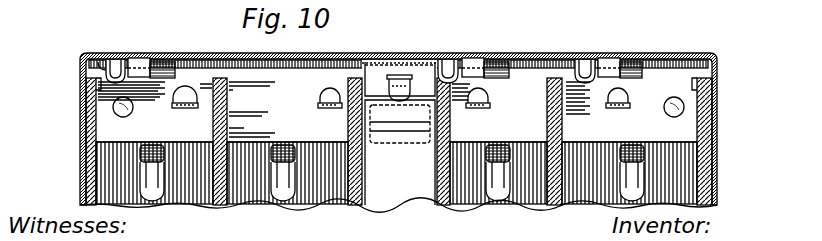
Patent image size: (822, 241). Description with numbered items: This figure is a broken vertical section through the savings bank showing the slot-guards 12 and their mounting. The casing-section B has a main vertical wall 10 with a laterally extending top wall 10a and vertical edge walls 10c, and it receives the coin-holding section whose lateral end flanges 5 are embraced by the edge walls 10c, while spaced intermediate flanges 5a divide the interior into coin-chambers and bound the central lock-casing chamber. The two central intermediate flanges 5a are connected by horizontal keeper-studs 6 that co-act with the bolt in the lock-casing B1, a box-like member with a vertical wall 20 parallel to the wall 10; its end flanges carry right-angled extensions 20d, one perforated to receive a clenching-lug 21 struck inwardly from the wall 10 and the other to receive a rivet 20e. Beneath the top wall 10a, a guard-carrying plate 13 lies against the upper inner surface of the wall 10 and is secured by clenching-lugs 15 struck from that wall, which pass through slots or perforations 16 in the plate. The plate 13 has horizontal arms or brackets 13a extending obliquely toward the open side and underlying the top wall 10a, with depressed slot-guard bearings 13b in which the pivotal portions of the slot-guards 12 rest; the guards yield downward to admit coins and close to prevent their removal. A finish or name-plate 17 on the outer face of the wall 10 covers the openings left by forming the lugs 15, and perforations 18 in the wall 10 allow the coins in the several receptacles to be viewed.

The casing-section B is at (691, 58).
The lock-casing B1 is at (424, 202).
The lateral end walls or flanges 5 is at (90, 153).
The intermediate flanges 5a is at (552, 196).
The keeper-studs 6 is at (398, 130).
The vertical wall 10 is at (322, 195).
The top wall 10a is at (377, 73).
The vertical edge walls 10c is at (738, 108).
The slot-guards 12 is at (160, 62).
The guard-carrying plate 13 is at (229, 127).
The arms or brackets 13a is at (107, 58).
The slot-guard bearings 13b is at (161, 76).
The clenching-lugs 15 is at (197, 98).
The slots or perforations 16 is at (178, 104).
The finish or name-plate 17 is at (503, 190).
The perforations 18 is at (288, 190).
The vertical wall 20 is at (400, 167).
The extensions 20d is at (413, 60).
The rivet 20e is at (736, 70).
The clenching-lug 21 is at (412, 90).